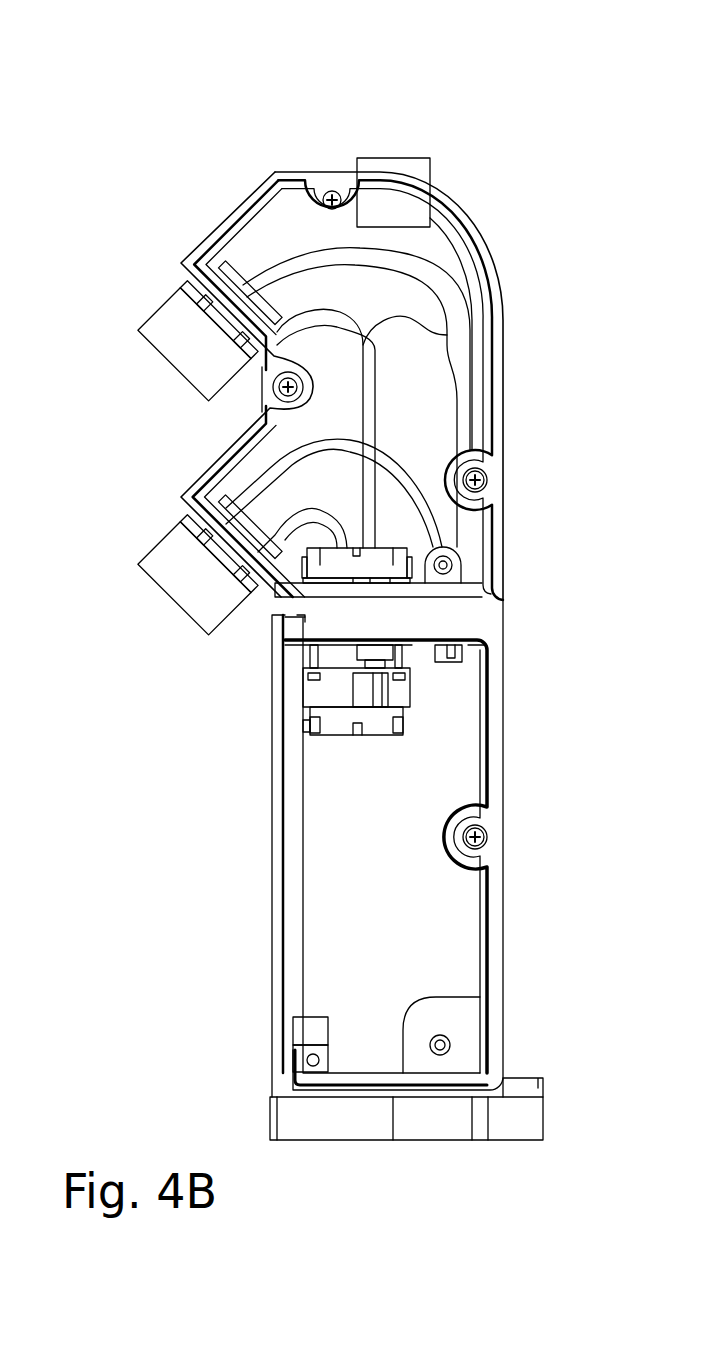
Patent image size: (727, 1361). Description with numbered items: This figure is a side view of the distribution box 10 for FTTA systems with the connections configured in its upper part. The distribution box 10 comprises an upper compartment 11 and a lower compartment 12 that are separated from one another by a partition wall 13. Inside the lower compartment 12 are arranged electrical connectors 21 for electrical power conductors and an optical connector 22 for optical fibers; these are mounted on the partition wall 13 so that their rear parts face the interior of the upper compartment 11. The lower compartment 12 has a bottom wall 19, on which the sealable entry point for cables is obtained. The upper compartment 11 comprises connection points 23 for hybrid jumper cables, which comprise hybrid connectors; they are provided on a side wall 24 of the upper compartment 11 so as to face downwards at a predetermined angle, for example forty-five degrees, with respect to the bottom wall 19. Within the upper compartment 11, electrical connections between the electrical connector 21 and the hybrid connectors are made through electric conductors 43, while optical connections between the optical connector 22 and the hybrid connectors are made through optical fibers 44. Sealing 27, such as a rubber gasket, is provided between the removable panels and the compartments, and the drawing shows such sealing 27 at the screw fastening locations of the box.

The distribution box 10 is at (535, 113).
The upper compartment 11 is at (495, 236).
The lower compartment 12 is at (518, 942).
The partition wall 13 is at (430, 636).
The bottom wall 19 is at (457, 1097).
The electrical connector 21 is at (410, 723).
The optical connector 22 is at (447, 657).
The connection point 23 is at (165, 358).
The side wall 24 is at (183, 270).
The sealing 27 is at (488, 410).
The electric conductor 43 is at (465, 358).
The optical fiber 44 is at (465, 360).